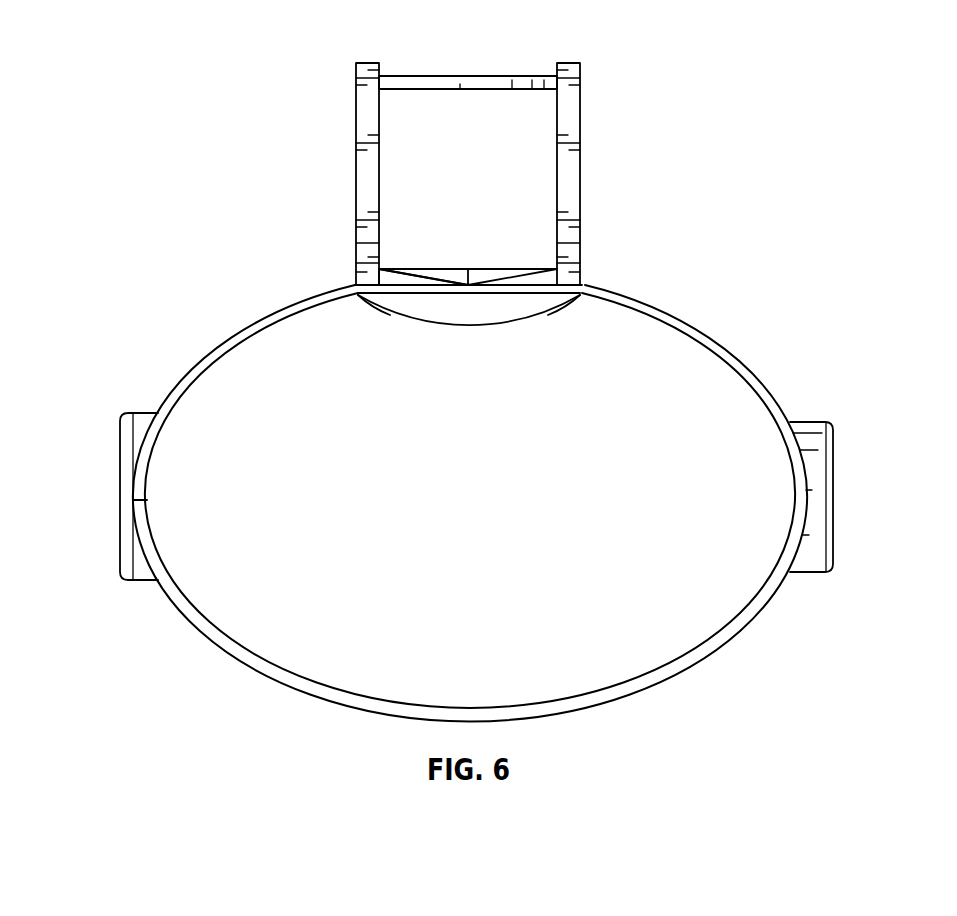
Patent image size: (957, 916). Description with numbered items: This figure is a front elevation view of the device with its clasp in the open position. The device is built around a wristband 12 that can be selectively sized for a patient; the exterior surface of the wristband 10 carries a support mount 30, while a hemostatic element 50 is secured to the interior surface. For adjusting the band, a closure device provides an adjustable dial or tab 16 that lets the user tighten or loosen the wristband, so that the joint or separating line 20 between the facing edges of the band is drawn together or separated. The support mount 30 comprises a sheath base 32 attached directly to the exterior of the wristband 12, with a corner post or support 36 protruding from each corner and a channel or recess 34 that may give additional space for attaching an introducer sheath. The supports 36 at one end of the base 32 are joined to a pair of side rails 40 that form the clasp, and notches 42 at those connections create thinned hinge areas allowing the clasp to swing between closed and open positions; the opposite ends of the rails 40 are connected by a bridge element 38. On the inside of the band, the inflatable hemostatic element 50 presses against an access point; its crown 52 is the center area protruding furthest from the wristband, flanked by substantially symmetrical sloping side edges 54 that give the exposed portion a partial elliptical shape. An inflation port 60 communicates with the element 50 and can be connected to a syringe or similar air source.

The wristband 10 is at (720, 230).
The wristband 12 is at (724, 344).
The adjustable dial or tab 16 is at (120, 470).
The joint or separating line 20 is at (143, 508).
The support mount 30 is at (477, 147).
The sheath base 32 is at (389, 278).
The channel or recess 34 is at (460, 277).
The corner post or support 36 is at (366, 275).
The bridge element 38 is at (447, 85).
The side rail 40 is at (368, 103).
The notch 42 is at (368, 243).
The hemostatic element 50 is at (469, 359).
The crown 52 is at (479, 328).
The sloping side edge 54 is at (386, 314).
The inflation port 60 is at (818, 422).